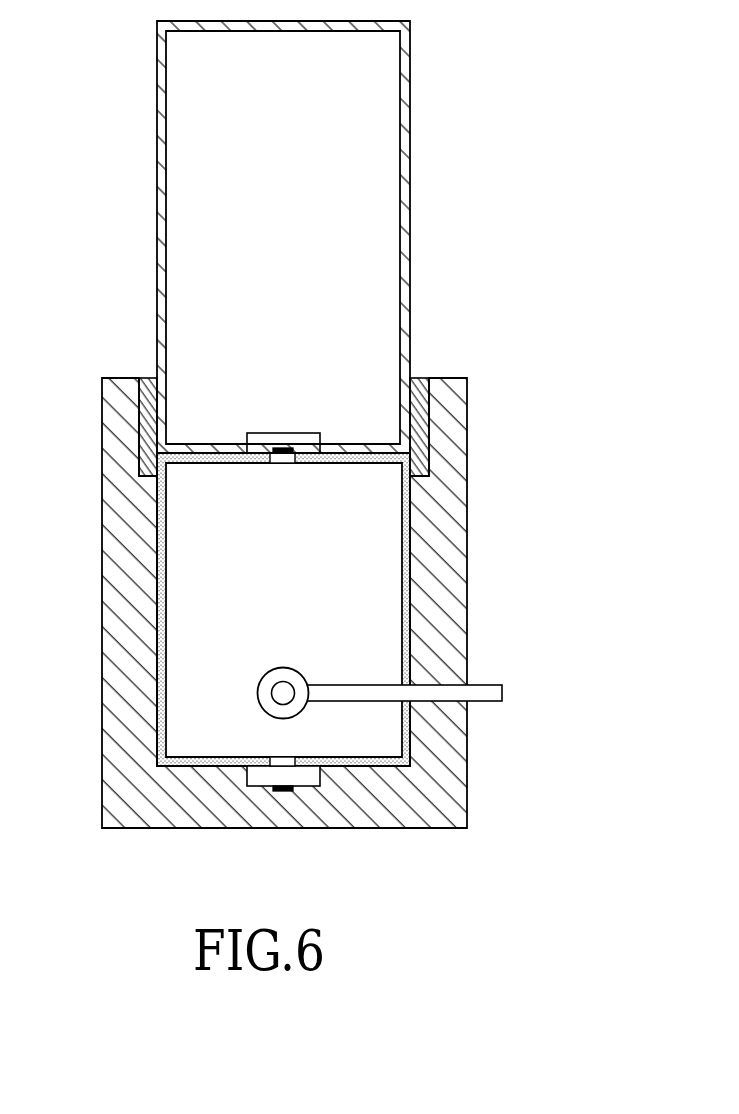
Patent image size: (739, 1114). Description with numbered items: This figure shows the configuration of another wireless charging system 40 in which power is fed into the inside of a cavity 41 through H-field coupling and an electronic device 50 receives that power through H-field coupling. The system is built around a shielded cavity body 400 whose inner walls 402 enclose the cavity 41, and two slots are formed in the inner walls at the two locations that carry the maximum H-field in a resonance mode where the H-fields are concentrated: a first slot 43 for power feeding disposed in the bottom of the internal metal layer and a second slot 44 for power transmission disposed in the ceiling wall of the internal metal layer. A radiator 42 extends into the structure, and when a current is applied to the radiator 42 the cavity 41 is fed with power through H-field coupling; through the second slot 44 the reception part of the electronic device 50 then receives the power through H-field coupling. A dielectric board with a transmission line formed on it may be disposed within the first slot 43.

The holding assembly 40 is at (326, 603).
The housing 400 is at (493, 771).
The liner wall of housing 402 is at (407, 514).
The receiving chamber 41 is at (185, 625).
The lever rod 42 is at (497, 683).
The lower contact element 43 is at (277, 760).
The upper contact element 44 is at (282, 458).
The container box 50 is at (424, 149).